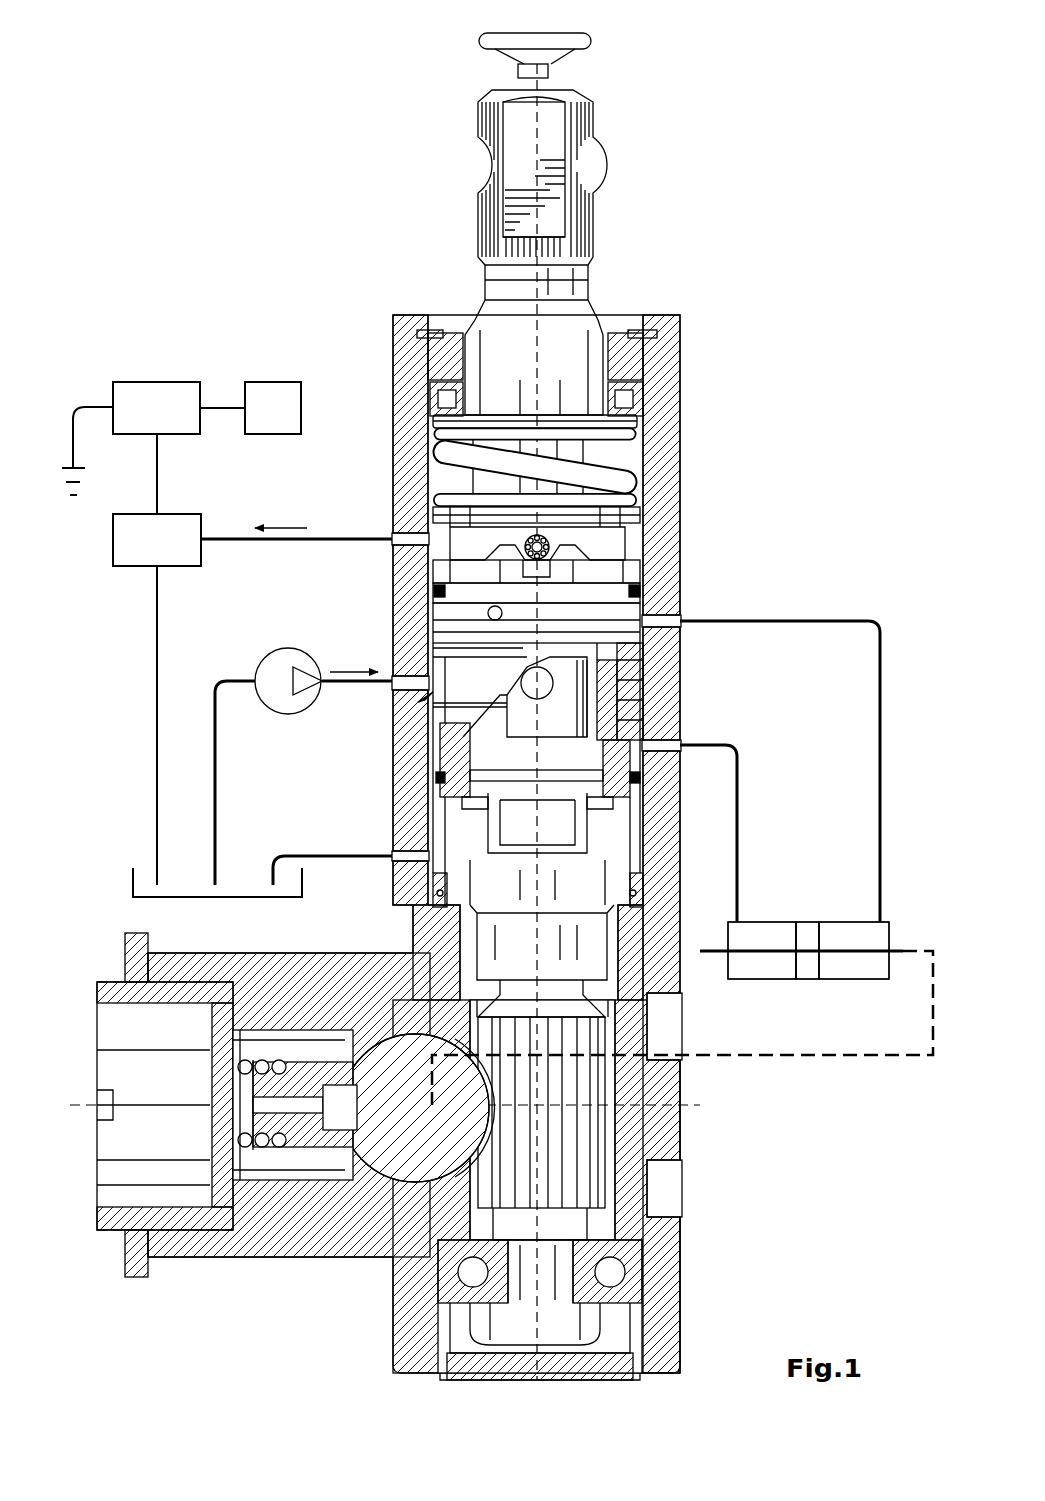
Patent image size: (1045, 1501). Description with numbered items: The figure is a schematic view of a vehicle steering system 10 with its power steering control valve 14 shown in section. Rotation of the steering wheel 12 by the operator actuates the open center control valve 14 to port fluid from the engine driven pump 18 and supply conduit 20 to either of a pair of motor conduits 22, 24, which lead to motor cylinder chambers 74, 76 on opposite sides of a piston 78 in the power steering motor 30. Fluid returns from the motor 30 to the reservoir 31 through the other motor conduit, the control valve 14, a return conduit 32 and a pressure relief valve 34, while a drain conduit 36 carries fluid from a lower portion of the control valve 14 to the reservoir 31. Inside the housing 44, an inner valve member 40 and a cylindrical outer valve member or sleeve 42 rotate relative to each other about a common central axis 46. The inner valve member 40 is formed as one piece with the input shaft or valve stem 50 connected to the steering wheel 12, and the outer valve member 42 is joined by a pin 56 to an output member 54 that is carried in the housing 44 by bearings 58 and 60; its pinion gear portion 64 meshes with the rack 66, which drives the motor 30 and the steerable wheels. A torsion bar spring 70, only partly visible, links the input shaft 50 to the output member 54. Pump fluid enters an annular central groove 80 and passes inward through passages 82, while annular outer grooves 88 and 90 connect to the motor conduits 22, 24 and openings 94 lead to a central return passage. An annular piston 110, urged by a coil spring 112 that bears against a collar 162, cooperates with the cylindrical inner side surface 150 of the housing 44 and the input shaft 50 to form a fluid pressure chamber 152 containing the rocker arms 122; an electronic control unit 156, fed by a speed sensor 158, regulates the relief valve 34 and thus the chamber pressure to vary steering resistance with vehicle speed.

The vehicle steering system 10 is at (775, 218).
The steering wheel 12 is at (578, 44).
The power steering control valve 14 is at (633, 297).
The pump 18 is at (283, 708).
The supply conduit 20 is at (338, 686).
The motor conduit 22 is at (827, 620).
The motor conduit 24 is at (737, 752).
The power steering motor 30 is at (845, 983).
The reservoir 31 is at (133, 885).
The return conduit 32 is at (157, 705).
The pressure relief valve 34 is at (120, 538).
The drain conduit 36 is at (322, 858).
The inner valve member 40 is at (648, 730).
The outer valve member 42 is at (425, 700).
The housing 44 is at (675, 332).
The central axis 46 is at (528, 123).
The input shaft 50 is at (565, 160).
The output member 54 is at (612, 970).
The pin 56 is at (433, 822).
The bearing 58 is at (598, 955).
The bearing 60 is at (645, 1290).
The pinion gear portion 64 is at (585, 1158).
The rack 66 is at (403, 1153).
The torsion bar spring 70 is at (558, 845).
The motor cylinder chamber 74 is at (852, 930).
The motor cylinder chamber 76 is at (770, 930).
The piston 78 is at (808, 968).
The annular central groove 80 is at (650, 690).
The passage 82 is at (435, 660).
The annular outer groove 88 is at (435, 612).
The annular outer groove 90 is at (580, 722).
The opening 94 is at (527, 690).
The annular piston 110 is at (645, 500).
The coil spring 112 is at (440, 455).
The rocker arm 122 is at (440, 512).
The cylindrical inner side surface 150 is at (643, 460).
The annular fluid pressure chamber 152 is at (640, 585).
The electronic control unit 156 is at (158, 392).
The speed sensor 158 is at (270, 392).
The collar 162 is at (430, 430).